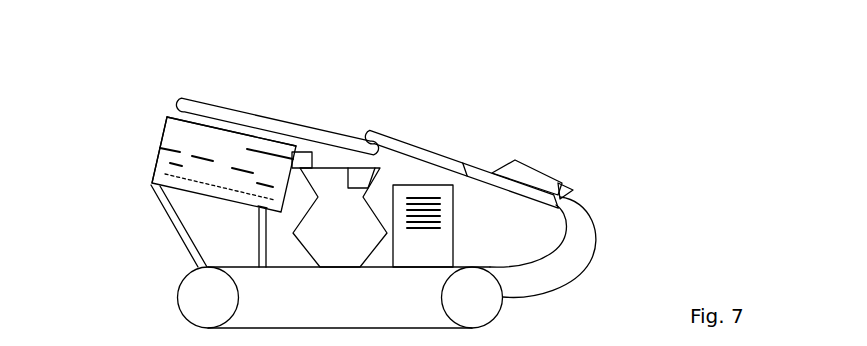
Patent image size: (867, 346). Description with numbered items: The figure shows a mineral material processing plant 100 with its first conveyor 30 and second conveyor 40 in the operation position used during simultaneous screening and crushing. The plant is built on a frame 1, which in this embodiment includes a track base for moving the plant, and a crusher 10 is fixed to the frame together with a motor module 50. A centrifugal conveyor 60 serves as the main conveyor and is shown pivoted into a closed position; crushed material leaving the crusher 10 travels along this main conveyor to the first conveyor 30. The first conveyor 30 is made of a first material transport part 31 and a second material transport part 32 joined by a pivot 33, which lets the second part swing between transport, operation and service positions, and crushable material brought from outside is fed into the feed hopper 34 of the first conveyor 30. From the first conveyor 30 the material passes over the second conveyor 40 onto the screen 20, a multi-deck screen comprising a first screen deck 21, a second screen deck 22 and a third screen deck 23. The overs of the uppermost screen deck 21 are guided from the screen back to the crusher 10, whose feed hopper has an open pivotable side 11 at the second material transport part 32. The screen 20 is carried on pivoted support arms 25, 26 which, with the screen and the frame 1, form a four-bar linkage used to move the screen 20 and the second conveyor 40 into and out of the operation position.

The mineral material processing plant 100 is at (688, 99).
The frame 1 is at (373, 316).
The crusher 10 is at (352, 244).
The open pivotable side 11 is at (380, 169).
The motor module 50 is at (437, 261).
The screen 20 is at (192, 120).
The first screen deck 21 is at (167, 117).
The second screen deck 22 is at (160, 148).
The third screen deck 23 is at (160, 175).
The support arm 25 is at (259, 248).
The support arm 26 is at (163, 213).
The second conveyor 40 is at (283, 121).
The first conveyor 30 is at (499, 138).
The first material transport part 31 is at (570, 183).
The second material transport part 32 is at (408, 146).
The pivot 33 is at (465, 163).
The feed hopper 34 is at (548, 182).
The centrifugal conveyor 60 is at (585, 238).